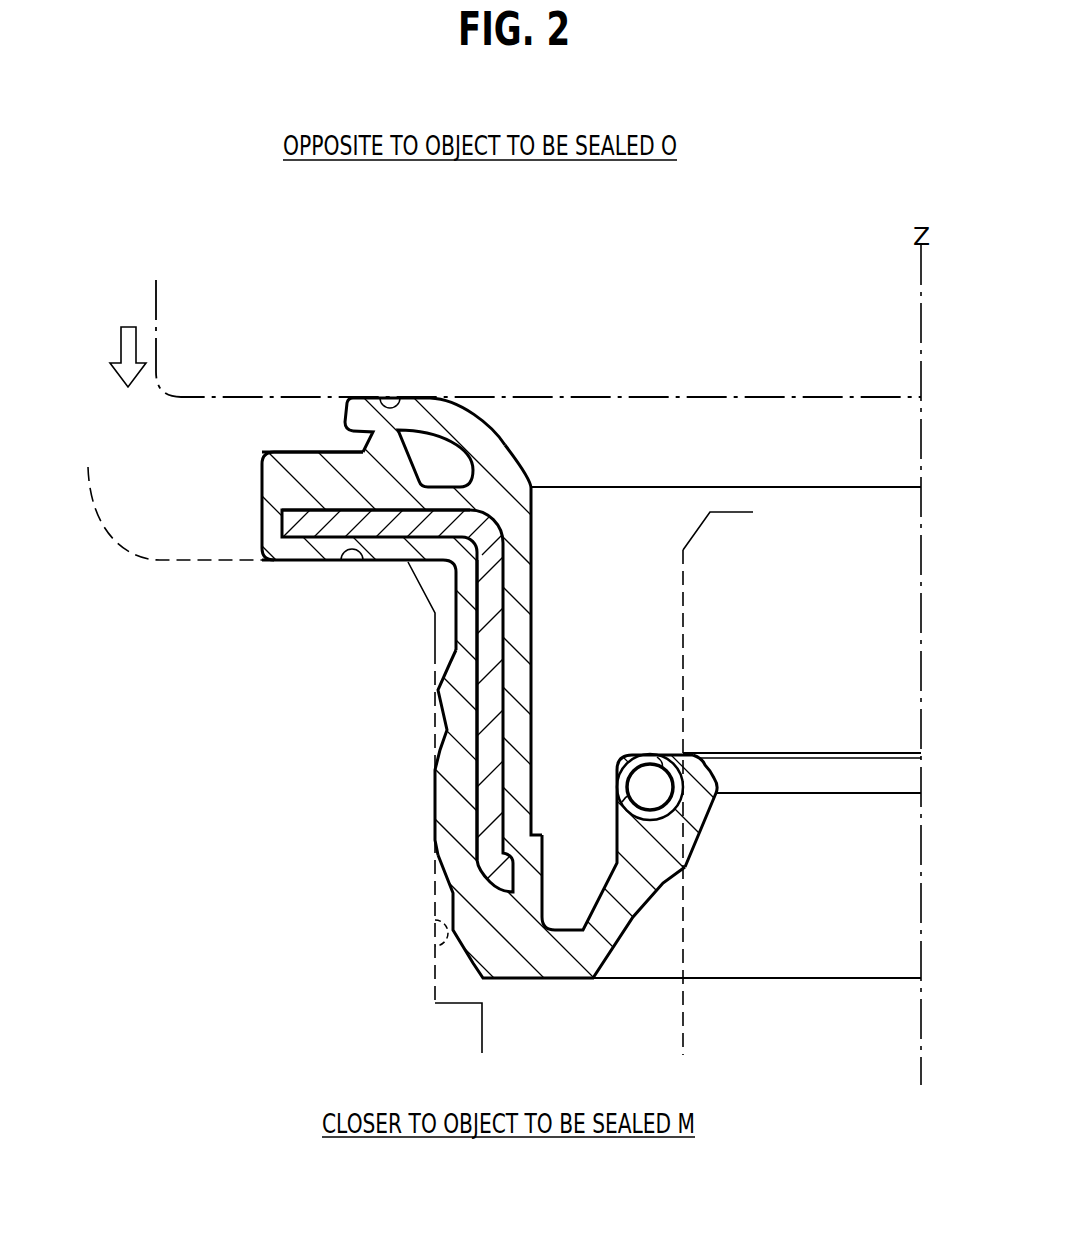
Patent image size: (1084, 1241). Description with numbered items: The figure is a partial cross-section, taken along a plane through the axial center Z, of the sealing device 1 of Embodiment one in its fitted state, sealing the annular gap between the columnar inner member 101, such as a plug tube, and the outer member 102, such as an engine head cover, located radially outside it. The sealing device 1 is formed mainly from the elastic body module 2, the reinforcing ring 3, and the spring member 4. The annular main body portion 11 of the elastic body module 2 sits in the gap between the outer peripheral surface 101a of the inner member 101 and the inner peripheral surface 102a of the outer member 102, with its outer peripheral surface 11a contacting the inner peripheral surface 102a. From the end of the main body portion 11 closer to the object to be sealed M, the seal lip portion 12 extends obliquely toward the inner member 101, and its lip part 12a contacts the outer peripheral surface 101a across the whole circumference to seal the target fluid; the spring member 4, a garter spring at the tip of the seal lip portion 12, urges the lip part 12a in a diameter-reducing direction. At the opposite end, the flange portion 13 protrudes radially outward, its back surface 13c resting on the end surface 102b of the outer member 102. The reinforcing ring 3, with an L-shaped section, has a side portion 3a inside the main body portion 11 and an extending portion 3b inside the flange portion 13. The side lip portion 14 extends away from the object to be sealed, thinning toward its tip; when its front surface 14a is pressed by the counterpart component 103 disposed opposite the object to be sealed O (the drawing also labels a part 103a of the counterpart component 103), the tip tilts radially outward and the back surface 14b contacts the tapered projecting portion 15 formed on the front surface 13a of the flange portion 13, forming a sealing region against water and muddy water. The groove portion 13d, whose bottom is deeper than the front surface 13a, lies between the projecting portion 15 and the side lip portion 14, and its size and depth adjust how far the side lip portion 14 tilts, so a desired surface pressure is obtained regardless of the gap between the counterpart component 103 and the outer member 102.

The sealing device 1 is at (736, 384).
The elastic body module 2 is at (508, 681).
The reinforcing ring 3 is at (464, 700).
The side portion 3a is at (483, 808).
The extending portion 3b is at (323, 532).
The spring member 4 is at (661, 818).
The main body portion 11 is at (471, 671).
The outer peripheral surface 11a is at (436, 842).
The seal lip portion 12 is at (621, 890).
The lip part 12a is at (720, 787).
The flange portion 13 is at (383, 527).
The front surface 13a is at (306, 450).
The back surface 13c is at (266, 562).
The groove portion 13d is at (507, 448).
The side lip portion 14 is at (418, 484).
The front surface 14a is at (502, 418).
The back surface 14b is at (330, 426).
The projecting portion 15 is at (388, 442).
The inner member 101 is at (743, 783).
The outer peripheral surface 101a is at (683, 708).
The outer member 102 is at (285, 753).
The inner peripheral surface 102a is at (420, 948).
The end surface 102b is at (362, 566).
The counterpart component 103 is at (495, 321).
The protrusion of cover member 103a is at (378, 385).